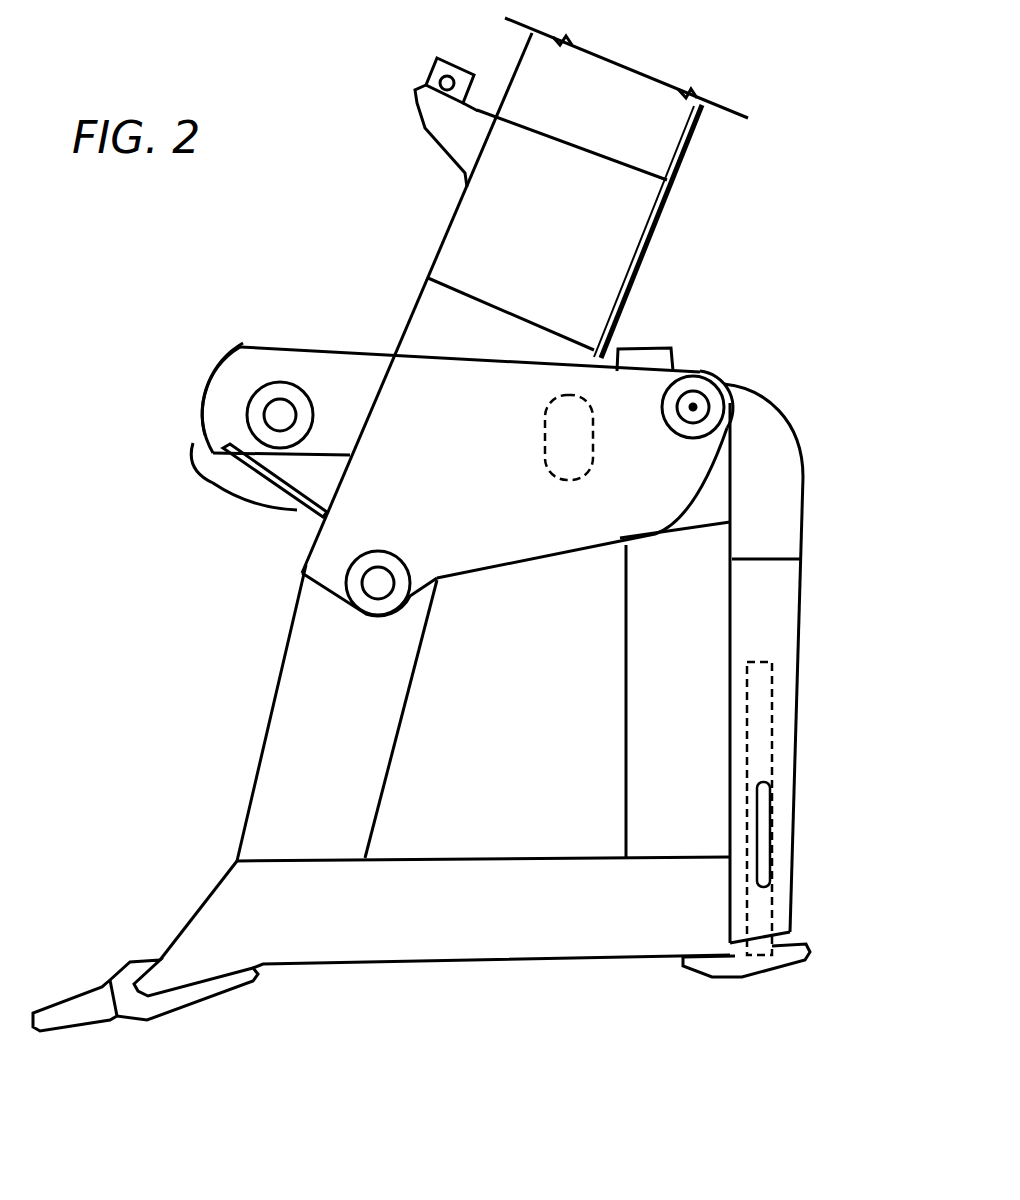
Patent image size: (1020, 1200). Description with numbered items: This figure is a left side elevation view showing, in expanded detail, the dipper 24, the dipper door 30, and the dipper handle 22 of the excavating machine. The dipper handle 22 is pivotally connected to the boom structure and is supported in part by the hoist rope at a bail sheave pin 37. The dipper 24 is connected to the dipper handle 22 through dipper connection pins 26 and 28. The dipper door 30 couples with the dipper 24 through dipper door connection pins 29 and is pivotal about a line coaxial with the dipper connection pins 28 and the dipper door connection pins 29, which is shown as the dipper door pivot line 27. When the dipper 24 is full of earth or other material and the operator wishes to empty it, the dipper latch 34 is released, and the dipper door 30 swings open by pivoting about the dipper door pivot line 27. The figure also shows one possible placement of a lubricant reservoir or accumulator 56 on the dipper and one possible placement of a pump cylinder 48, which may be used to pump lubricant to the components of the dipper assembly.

The dipper handle 22 is at (693, 143).
The dipper 24 is at (248, 806).
The dipper connection pin 26 is at (377, 592).
The dipper door pivot line 27 is at (682, 424).
The dipper connection pin 28 is at (684, 411).
The dipper door connection pin 29 is at (724, 390).
The dipper door 30 is at (810, 589).
The dipper latch 34 is at (773, 720).
The bail sheave pin 37 is at (280, 413).
The pump cylinder 48 is at (648, 347).
The lubricant reservoir or accumulator 56 is at (545, 447).